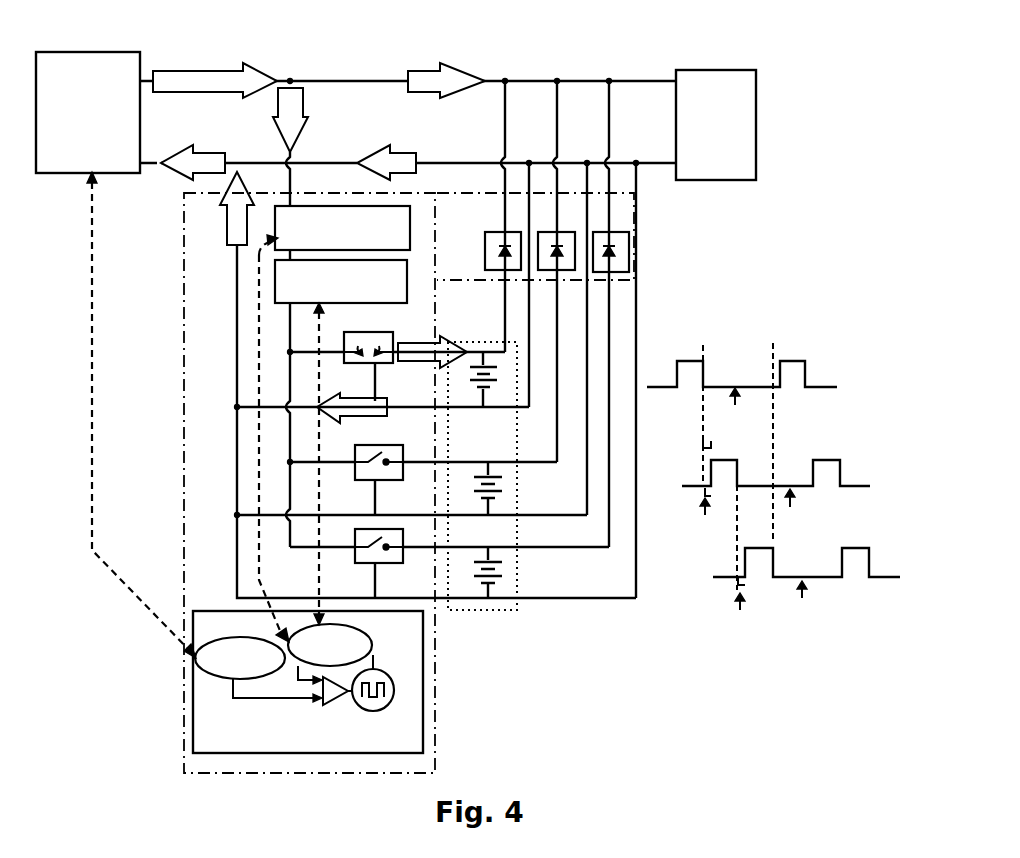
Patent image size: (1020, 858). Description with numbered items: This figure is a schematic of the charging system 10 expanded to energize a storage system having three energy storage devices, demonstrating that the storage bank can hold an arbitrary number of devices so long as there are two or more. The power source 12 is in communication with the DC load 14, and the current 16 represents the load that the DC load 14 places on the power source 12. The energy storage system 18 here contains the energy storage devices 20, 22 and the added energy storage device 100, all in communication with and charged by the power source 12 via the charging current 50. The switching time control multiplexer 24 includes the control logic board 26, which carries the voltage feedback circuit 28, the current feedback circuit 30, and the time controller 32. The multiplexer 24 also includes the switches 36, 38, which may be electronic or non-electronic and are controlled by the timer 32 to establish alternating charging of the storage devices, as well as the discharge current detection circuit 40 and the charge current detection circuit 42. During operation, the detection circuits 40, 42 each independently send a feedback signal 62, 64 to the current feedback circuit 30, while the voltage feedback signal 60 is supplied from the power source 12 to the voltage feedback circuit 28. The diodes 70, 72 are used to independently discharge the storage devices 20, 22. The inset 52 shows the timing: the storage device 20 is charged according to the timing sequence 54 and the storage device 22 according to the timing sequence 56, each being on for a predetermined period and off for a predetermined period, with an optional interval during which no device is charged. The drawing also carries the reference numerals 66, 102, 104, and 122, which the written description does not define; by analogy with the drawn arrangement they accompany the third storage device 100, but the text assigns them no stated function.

The charging system 10 is at (358, 52).
The power source 12 is at (100, 42).
The DC load 14 is at (690, 70).
The current 16 is at (435, 62).
The energy storage system 18 is at (519, 612).
The energy storage device 20 is at (468, 380).
The energy storage device 22 is at (502, 491).
The switching time control multiplexer 24 is at (183, 297).
The control logic board 26 is at (232, 610).
The voltage feedback circuit 28 is at (208, 675).
The current feedback circuit 30 is at (363, 629).
The time controller 32 is at (387, 672).
The switch 36 is at (367, 332).
The switch 38 is at (375, 445).
The discharge current detection circuit 40 is at (405, 203).
The charge current detection circuit 42 is at (409, 297).
The charging current 50 is at (305, 133).
The inset 52 is at (735, 328).
The timing sequence 54 is at (688, 345).
The timing sequence 56 is at (723, 450).
The voltage feedback signal 60 is at (94, 243).
The feedback signal 62 is at (259, 318).
The feedback signal 64 is at (316, 574).
The third switch control line 66 is at (377, 578).
The diode 70 is at (497, 232).
The diode 72 is at (544, 232).
The energy storage device 100 is at (375, 529).
The third diode 102 is at (630, 240).
The third switch timing pulse 104 is at (745, 540).
The total current Itotal 122 is at (176, 64).